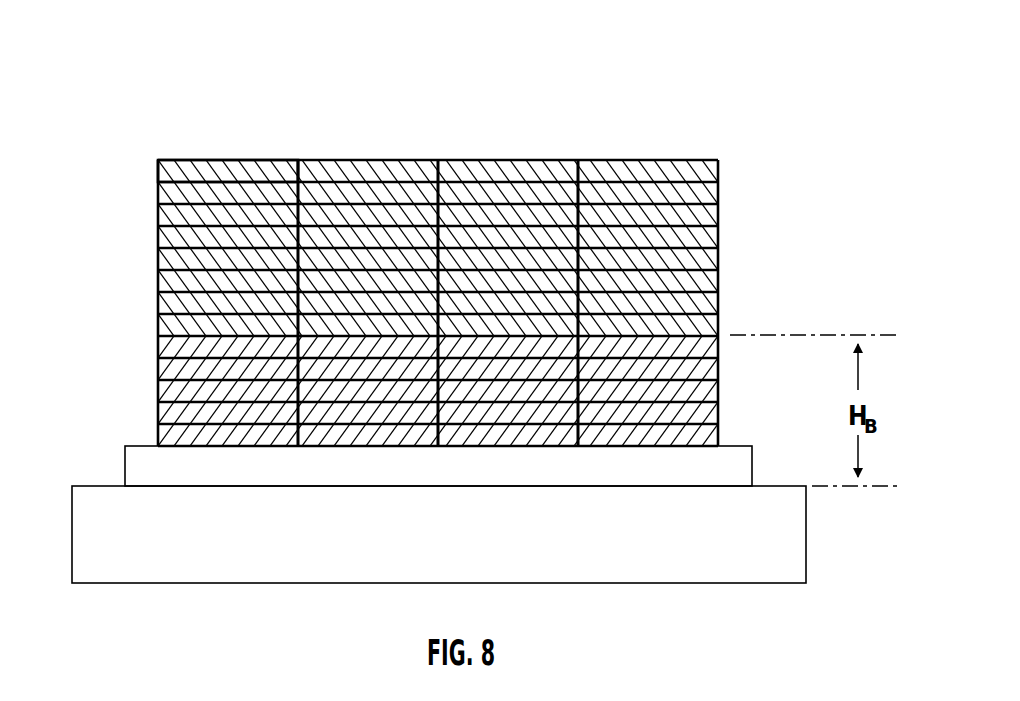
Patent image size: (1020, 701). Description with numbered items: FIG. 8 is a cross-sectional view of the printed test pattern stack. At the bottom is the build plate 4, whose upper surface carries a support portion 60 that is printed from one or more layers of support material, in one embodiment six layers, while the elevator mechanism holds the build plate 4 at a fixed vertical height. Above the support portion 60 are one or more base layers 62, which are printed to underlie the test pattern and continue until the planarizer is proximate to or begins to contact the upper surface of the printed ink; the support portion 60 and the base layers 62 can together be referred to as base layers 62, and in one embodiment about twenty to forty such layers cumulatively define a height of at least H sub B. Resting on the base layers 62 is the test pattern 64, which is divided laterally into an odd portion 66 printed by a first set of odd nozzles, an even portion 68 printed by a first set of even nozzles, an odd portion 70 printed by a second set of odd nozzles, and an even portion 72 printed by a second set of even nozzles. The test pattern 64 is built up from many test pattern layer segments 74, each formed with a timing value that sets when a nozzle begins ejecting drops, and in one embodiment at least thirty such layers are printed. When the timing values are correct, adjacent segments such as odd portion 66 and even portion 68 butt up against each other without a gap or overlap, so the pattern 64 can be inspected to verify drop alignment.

The build plate 4 is at (72, 527).
The support portion 60 is at (125, 467).
The base layers 62 is at (158, 390).
The test pattern 64 is at (738, 162).
The odd portion of test pattern 66 is at (223, 124).
The even portion of test pattern 68 is at (377, 124).
The odd portion of test pattern 70 is at (510, 124).
The even portion of test pattern 72 is at (648, 124).
The test pattern layer segments 74 is at (158, 168).